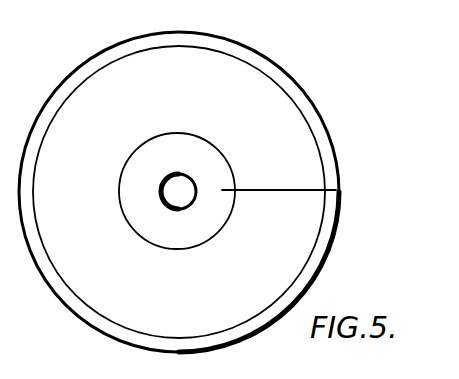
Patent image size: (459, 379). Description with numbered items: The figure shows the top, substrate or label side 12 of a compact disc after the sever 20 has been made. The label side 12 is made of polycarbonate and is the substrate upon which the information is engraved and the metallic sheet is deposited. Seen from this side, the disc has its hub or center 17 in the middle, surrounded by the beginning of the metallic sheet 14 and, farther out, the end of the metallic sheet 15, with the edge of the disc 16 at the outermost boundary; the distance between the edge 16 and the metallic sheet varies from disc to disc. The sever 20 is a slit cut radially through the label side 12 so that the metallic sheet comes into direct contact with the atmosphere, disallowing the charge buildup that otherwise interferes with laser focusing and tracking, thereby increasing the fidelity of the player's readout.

The label side of the disc 12 is at (191, 187).
The beginning of the metallic sheet 14 is at (129, 223).
The end of the metallic sheet 15 is at (297, 107).
The edge of the disc 16 is at (275, 65).
The hub or center of the disc 17 is at (184, 174).
The sever 20 is at (298, 193).